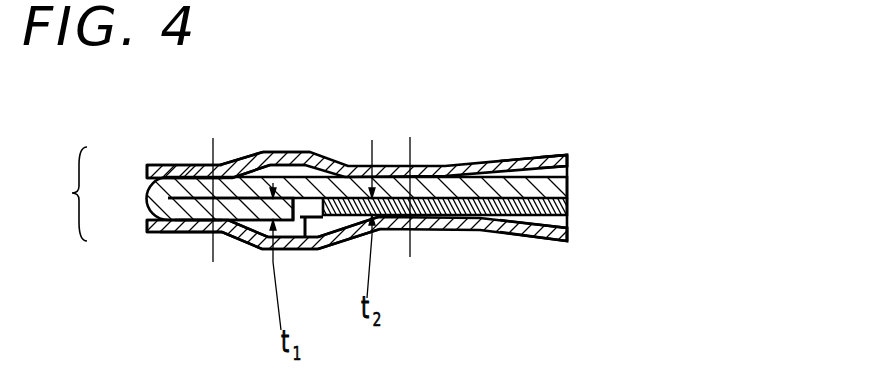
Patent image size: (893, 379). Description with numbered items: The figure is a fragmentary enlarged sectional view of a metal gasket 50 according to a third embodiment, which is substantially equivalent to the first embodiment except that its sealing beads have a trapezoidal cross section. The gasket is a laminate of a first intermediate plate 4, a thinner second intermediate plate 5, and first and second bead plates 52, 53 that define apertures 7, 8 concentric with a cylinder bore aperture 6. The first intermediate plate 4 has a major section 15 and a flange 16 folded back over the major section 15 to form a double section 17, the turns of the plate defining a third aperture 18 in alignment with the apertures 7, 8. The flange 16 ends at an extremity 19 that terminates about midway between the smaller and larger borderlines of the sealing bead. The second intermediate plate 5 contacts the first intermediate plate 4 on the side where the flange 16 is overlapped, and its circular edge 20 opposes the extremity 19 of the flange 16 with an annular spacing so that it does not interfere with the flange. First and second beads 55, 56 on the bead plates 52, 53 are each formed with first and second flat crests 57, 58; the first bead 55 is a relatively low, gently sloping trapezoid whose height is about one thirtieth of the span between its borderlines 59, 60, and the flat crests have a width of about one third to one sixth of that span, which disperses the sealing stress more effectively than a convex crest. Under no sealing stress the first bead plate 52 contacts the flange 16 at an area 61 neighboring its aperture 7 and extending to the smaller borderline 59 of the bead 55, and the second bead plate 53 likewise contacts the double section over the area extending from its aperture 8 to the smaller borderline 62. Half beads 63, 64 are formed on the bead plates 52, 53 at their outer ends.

The first intermediate plate 4 is at (568, 188).
The second intermediate plate 5 is at (568, 207).
The cylinder bore aperture 6 is at (71, 194).
The aperture 7 is at (142, 232).
The aperture 8 is at (143, 167).
The major section 15 is at (530, 155).
The flange 16 is at (200, 216).
The double section 17 is at (172, 166).
The third aperture 18 is at (146, 200).
The extremity 19 is at (295, 236).
The circular edge 20 is at (313, 240).
The metal gasket 50 is at (475, 135).
The first bead plate 52 is at (445, 230).
The second bead plate 53 is at (432, 167).
The first bead 55 is at (255, 250).
The second bead 56 is at (252, 155).
The first flat crest 57 is at (310, 250).
The second flat crest 58 is at (312, 152).
The smaller borderline 59 is at (213, 255).
The larger borderline 60 is at (410, 245).
The area 61 is at (173, 233).
The smaller borderline 62 is at (190, 167).
The half bead 63 is at (522, 240).
The half bead 64 is at (548, 158).